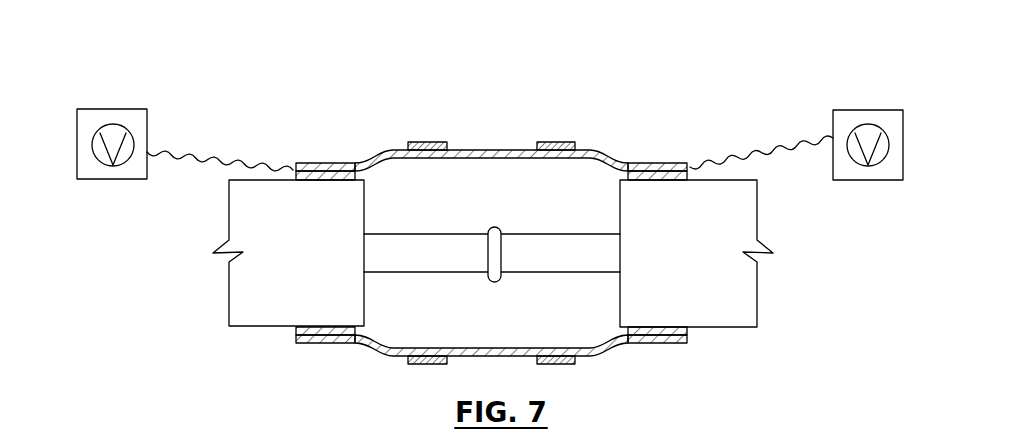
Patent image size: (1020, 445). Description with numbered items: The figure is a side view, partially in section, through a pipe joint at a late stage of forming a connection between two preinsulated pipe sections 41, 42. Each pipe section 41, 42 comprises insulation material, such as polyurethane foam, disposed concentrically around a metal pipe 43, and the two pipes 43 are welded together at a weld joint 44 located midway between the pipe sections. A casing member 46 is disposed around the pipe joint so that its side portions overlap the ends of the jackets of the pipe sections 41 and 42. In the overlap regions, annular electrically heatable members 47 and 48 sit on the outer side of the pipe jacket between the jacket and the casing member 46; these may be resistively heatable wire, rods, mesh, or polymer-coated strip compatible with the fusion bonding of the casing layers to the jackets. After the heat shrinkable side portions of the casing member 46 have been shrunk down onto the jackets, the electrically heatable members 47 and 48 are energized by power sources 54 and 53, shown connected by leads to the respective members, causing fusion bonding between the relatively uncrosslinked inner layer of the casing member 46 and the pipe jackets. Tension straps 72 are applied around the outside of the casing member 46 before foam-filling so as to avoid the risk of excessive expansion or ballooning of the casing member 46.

The preinsulated pipe section 41 is at (268, 311).
The preinsulated pipe section 42 is at (713, 307).
The pipe 43 is at (413, 248).
The weld joint 44 is at (493, 227).
The casing member 46 is at (489, 150).
The electrically heatable member 47 is at (327, 163).
The electrically heatable member 48 is at (663, 181).
The power source 53 is at (873, 110).
The power source 54 is at (121, 109).
The tension strap 72 is at (429, 142).